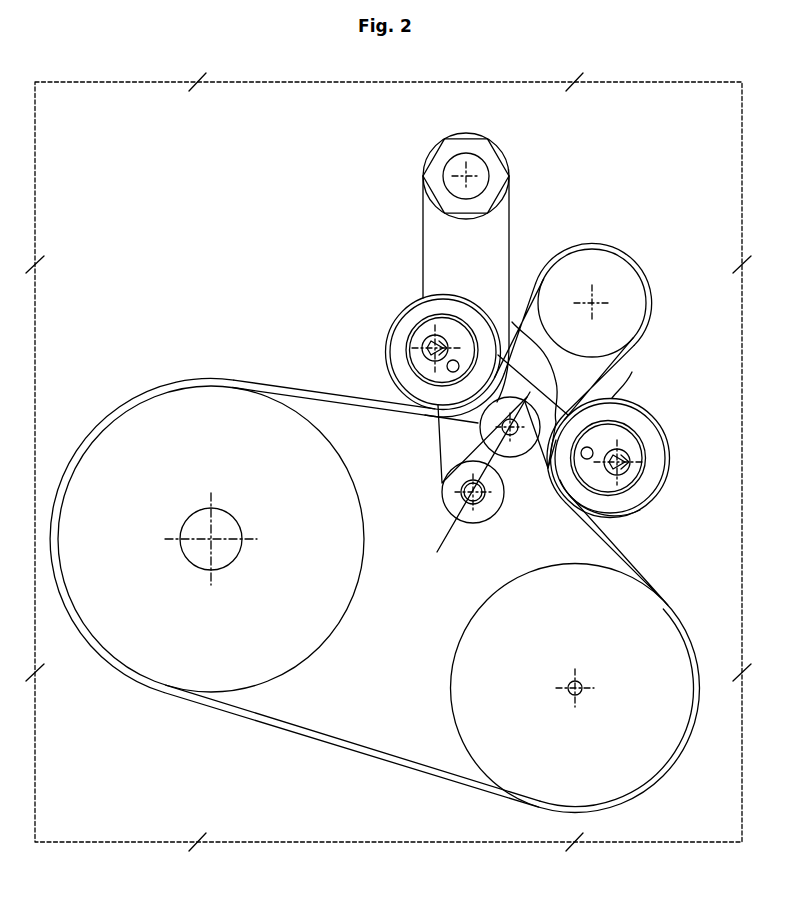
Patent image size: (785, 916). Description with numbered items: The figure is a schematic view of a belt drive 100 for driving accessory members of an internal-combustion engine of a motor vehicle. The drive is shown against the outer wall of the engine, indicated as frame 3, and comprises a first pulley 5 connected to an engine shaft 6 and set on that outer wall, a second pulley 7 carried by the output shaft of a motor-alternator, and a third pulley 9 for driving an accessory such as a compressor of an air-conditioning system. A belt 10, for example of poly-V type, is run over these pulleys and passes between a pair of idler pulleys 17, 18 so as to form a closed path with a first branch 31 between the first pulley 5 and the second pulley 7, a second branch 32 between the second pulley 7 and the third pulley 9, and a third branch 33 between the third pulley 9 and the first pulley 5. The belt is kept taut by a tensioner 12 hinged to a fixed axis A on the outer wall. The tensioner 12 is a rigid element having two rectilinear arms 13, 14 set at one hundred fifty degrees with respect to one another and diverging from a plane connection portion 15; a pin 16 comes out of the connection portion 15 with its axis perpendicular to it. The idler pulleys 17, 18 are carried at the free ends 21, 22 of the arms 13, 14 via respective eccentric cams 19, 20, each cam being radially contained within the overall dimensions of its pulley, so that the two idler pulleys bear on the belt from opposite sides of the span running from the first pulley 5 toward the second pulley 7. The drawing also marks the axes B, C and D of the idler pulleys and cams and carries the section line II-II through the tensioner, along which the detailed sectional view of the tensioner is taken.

The belt drive 100 is at (372, 240).
The engine / frame 3 is at (91, 846).
The first pulley 5 is at (137, 425).
The engine shaft 6 is at (236, 547).
The second pulley 7 is at (622, 270).
The third pulley 9 is at (637, 750).
The belt 10 is at (366, 742).
The tensioner 12 is at (513, 318).
The rectilinear arm 13 is at (505, 348).
The rectilinear arm 14 is at (545, 466).
The connection portion 15 is at (440, 440).
The pin 16 is at (500, 431).
The idler pulley 17 is at (450, 296).
The idler pulley 18 is at (635, 415).
The eccentric cam 19 is at (404, 322).
The eccentric cam 20 is at (650, 485).
The free end 21 is at (437, 400).
The free end 22 is at (613, 513).
The first branch 31 is at (292, 385).
The second branch 32 is at (662, 563).
The third branch 33 is at (310, 750).
The fixed axis A is at (465, 497).
The axis B is at (632, 372).
The axis C is at (430, 365).
The axis D is at (428, 345).
The section line II- II is at (532, 362).